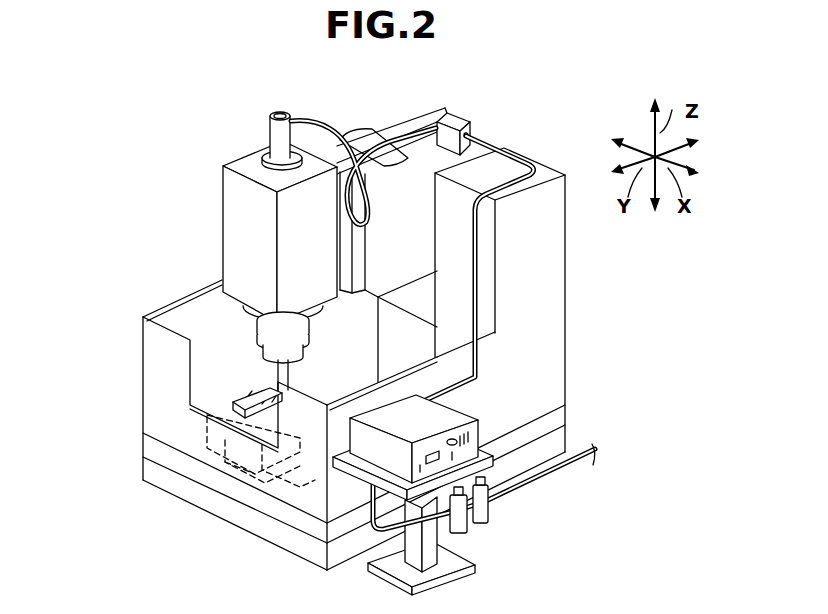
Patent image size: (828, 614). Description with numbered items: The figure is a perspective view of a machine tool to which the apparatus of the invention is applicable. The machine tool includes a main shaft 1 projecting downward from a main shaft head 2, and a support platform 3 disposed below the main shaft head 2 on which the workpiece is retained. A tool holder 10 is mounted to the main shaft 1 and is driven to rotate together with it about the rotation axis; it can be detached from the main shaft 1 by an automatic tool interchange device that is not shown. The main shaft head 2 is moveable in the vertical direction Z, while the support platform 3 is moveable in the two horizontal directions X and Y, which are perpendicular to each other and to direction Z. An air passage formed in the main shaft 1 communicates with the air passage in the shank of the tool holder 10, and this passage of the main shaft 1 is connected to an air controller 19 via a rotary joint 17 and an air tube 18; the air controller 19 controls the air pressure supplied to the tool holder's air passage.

The main shaft 1 is at (258, 328).
The main shaft head 2 is at (232, 227).
The support platform 3 is at (249, 412).
The tool holder 10 is at (291, 362).
The rotary joint 17 is at (272, 139).
The air tube 18 is at (330, 128).
The air controller 19 is at (447, 408).